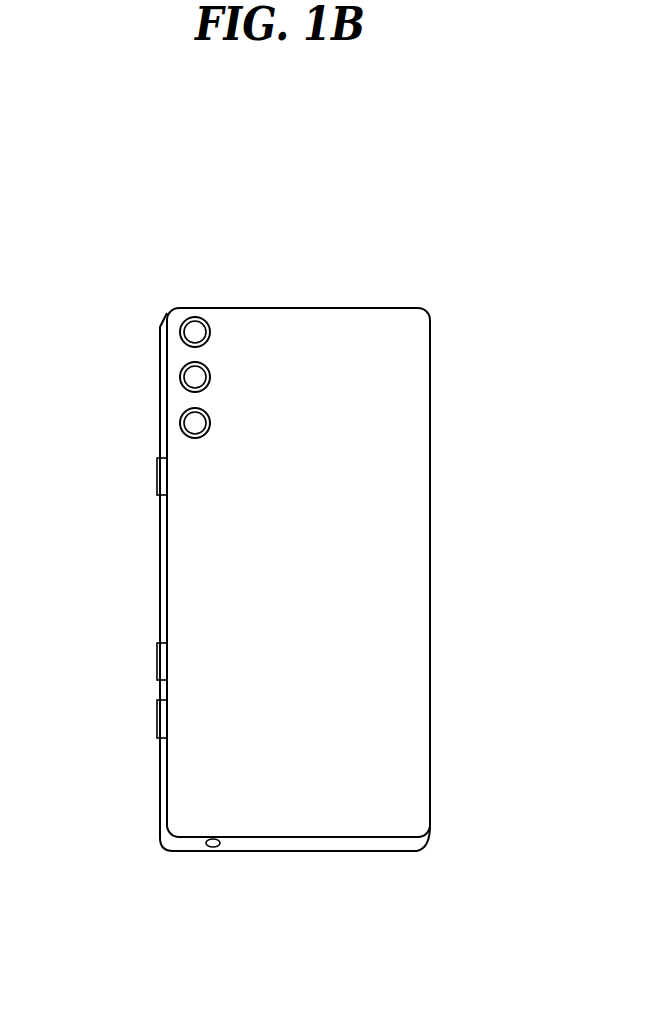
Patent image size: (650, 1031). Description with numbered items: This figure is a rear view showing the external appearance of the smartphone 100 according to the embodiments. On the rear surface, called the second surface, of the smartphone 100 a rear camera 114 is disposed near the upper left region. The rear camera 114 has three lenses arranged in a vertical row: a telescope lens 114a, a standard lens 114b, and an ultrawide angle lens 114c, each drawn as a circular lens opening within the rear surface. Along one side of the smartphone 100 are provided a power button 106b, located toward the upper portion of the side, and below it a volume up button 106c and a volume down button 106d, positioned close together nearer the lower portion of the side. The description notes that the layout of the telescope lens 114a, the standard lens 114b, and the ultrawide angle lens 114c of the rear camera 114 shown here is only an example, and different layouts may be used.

The smartphone 100 is at (431, 470).
The rear camera 114 is at (281, 316).
The telescope lens 114a is at (203, 377).
The standard lens 114b is at (203, 332).
The ultrawide angle lens 114c is at (203, 423).
The power button 106b is at (157, 468).
The volume up button 106c is at (157, 657).
The volume down button 106d is at (157, 714).